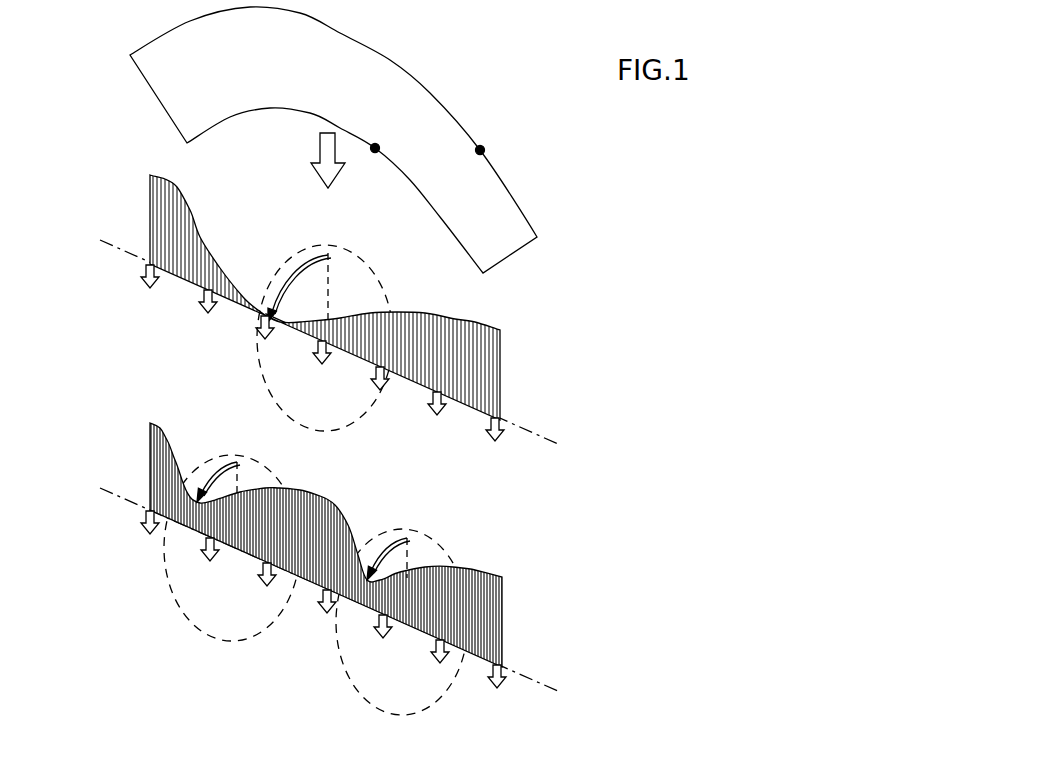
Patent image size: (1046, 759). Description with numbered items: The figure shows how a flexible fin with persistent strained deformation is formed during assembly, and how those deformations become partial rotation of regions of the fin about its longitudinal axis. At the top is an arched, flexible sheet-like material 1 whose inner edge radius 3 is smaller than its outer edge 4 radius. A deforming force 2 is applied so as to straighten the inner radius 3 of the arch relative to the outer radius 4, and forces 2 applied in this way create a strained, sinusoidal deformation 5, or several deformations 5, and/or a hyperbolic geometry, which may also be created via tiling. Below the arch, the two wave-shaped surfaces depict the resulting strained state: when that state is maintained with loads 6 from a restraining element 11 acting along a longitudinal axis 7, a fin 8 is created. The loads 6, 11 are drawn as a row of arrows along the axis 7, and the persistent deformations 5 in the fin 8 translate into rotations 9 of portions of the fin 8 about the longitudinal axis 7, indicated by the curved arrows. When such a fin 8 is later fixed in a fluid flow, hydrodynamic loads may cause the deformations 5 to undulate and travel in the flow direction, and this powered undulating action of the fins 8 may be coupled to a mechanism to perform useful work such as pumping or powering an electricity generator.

The arched, flexible sheet-like material 1 is at (345, 77).
The deforming force 2 is at (312, 175).
The inner edge radius 3 is at (375, 148).
The outer edge radius 4 is at (480, 150).
The sinusoidal deformation 5 is at (240, 307).
The loads 6 is at (285, 476).
The longitudinal axis 7 is at (555, 443).
The fin 8 is at (381, 421).
The rotations 9 is at (220, 460).
The restraining element 11 is at (155, 282).